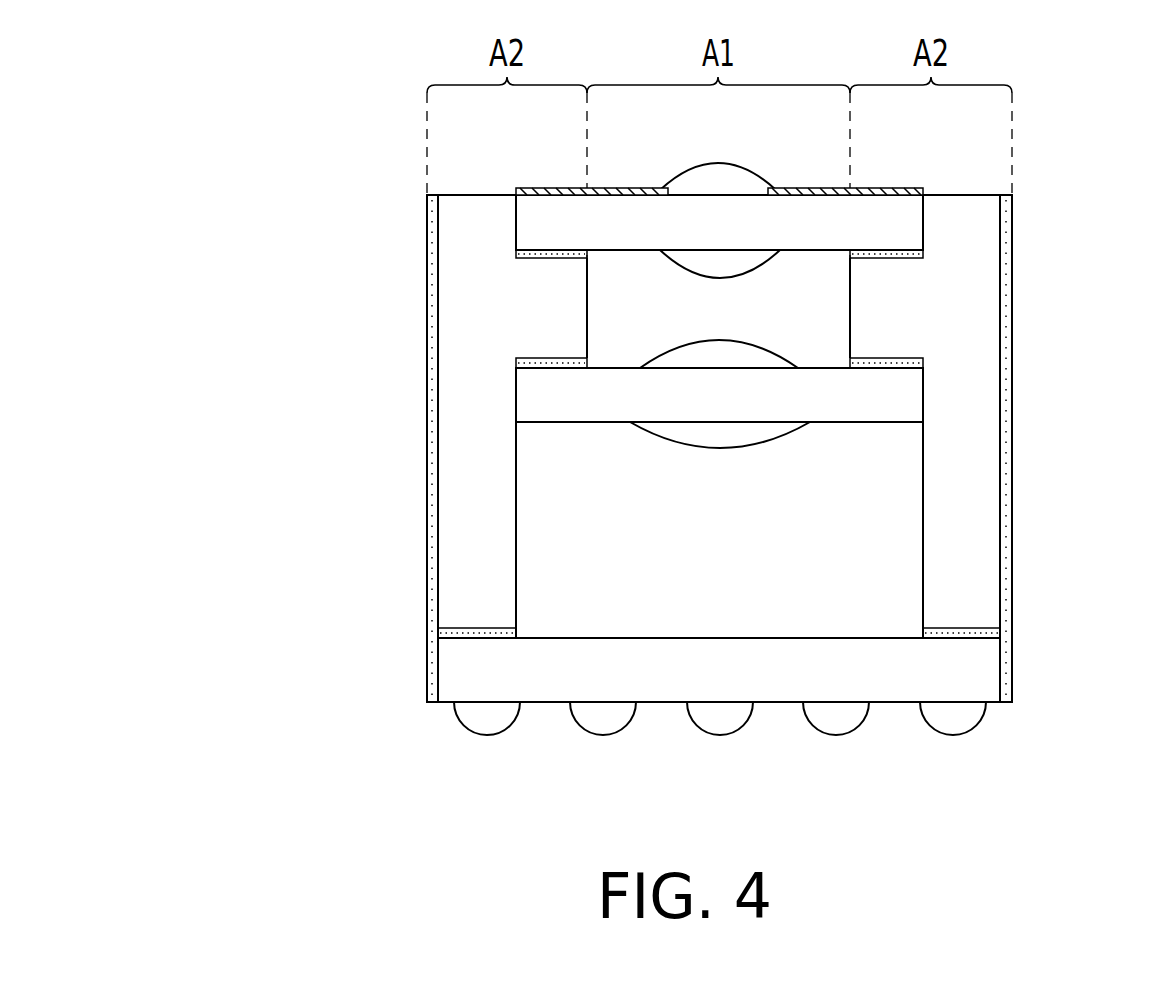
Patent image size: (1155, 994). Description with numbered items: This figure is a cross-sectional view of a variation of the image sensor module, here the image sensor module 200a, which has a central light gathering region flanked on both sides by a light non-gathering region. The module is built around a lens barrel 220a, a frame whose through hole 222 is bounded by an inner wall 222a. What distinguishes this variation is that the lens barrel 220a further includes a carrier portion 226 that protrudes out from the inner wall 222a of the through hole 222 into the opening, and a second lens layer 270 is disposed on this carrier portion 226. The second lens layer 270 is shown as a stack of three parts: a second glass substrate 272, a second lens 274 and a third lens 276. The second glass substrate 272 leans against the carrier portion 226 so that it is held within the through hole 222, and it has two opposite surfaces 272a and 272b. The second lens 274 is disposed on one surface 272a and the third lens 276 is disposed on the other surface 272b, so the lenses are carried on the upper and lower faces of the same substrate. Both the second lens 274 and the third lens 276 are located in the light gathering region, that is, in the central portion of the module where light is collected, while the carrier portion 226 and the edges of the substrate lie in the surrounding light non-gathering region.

The image sensor module 200a is at (298, 140).
The lens barrel 220a is at (960, 513).
The through hole 222 is at (612, 272).
The inner wall 222a is at (922, 223).
The carrier portion 226 is at (888, 300).
The second lens layer 270 is at (330, 292).
The second glass substrate 272 is at (532, 390).
The surface of the second glass substrate 272a is at (844, 423).
The surface of the second glass substrate 272b is at (824, 350).
The second lens 274 is at (700, 432).
The third lens 276 is at (703, 350).